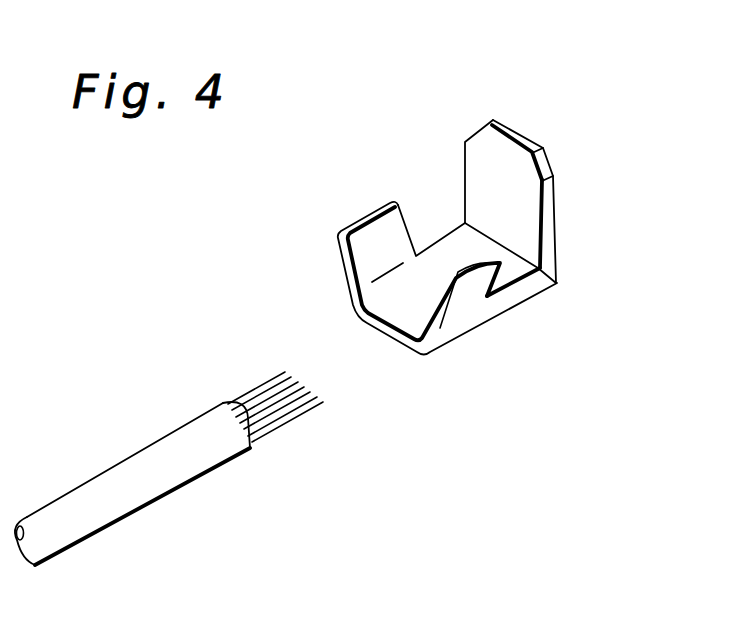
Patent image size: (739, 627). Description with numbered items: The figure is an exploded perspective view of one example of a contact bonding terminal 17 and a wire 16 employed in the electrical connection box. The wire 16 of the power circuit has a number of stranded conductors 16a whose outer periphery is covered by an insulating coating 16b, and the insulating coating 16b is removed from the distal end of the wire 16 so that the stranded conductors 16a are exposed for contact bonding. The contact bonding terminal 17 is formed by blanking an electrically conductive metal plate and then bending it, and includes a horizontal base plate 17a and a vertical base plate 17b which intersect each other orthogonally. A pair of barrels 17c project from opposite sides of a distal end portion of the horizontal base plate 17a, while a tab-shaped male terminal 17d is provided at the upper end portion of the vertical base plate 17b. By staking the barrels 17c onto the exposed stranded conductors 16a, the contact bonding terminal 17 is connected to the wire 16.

The wire 16 is at (170, 441).
The stranded conductors 16a is at (283, 423).
The insulating coating 16b is at (158, 437).
The contact bonding terminal 17 is at (398, 204).
The horizontal base plate 17a is at (453, 248).
The vertical base plate 17b is at (530, 237).
The barrels 17c is at (461, 311).
The male terminal 17d is at (517, 133).